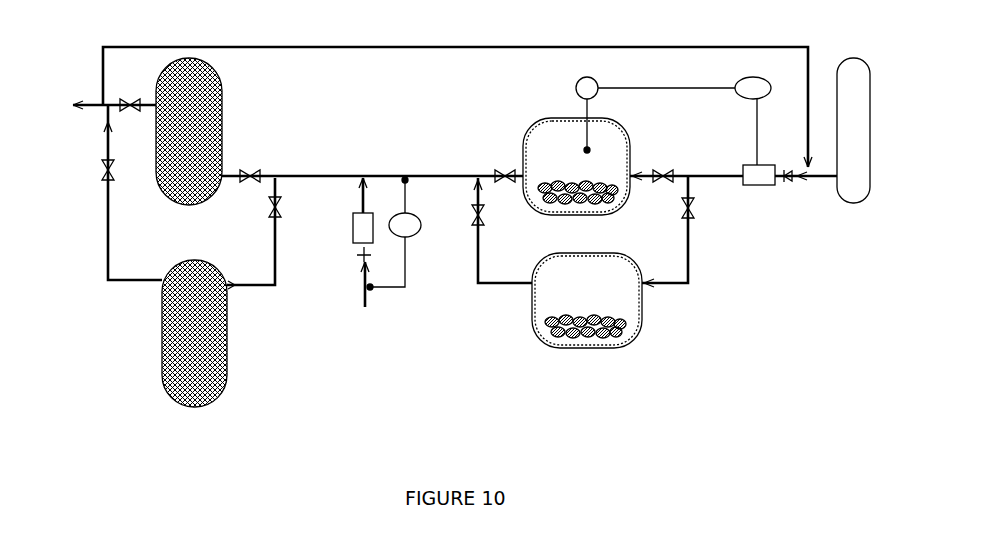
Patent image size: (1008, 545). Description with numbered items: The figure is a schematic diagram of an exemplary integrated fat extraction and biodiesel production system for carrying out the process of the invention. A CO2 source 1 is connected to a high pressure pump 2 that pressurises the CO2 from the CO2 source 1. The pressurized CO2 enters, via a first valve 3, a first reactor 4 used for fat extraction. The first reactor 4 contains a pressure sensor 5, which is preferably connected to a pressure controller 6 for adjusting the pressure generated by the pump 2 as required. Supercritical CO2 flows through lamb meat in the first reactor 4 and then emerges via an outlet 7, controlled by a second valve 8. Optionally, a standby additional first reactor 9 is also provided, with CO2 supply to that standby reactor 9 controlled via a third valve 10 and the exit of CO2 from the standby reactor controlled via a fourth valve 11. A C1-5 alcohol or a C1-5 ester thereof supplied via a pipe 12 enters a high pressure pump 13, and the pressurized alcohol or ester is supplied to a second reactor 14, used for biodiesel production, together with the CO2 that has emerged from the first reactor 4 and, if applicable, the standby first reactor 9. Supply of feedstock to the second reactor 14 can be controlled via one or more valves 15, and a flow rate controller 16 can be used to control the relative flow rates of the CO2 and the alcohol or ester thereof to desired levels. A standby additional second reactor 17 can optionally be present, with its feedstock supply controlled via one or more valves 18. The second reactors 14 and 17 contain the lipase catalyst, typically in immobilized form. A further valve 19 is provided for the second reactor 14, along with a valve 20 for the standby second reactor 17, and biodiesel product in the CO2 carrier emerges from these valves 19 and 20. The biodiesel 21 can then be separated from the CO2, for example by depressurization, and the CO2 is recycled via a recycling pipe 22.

The CO2 source 1 is at (610, 160).
The high pressure pump 2 is at (787, 161).
The first valve 3 is at (686, 161).
The first reactor 4 is at (584, 159).
The pressure sensor 5 is at (576, 114).
The pressure controller 6 is at (684, 111).
The outlet 7 is at (443, 156).
The second valve 8 is at (505, 158).
The standby additional first reactor 9 is at (601, 300).
The third valve 10 is at (668, 231).
The fourth valve 11 is at (502, 230).
The pipe 12 is at (346, 284).
The high pressure pump 13 is at (402, 240).
The second reactor 14 is at (204, 131).
The valves 15 is at (292, 158).
The flow rate controller 16 is at (405, 233).
The standby additional second reactor 17 is at (213, 333).
The valves 18 is at (254, 233).
The further valve 19 is at (134, 88).
The valve 20 is at (132, 192).
The biodiesel 21 is at (99, 108).
The recycling pipe 22 is at (457, 89).